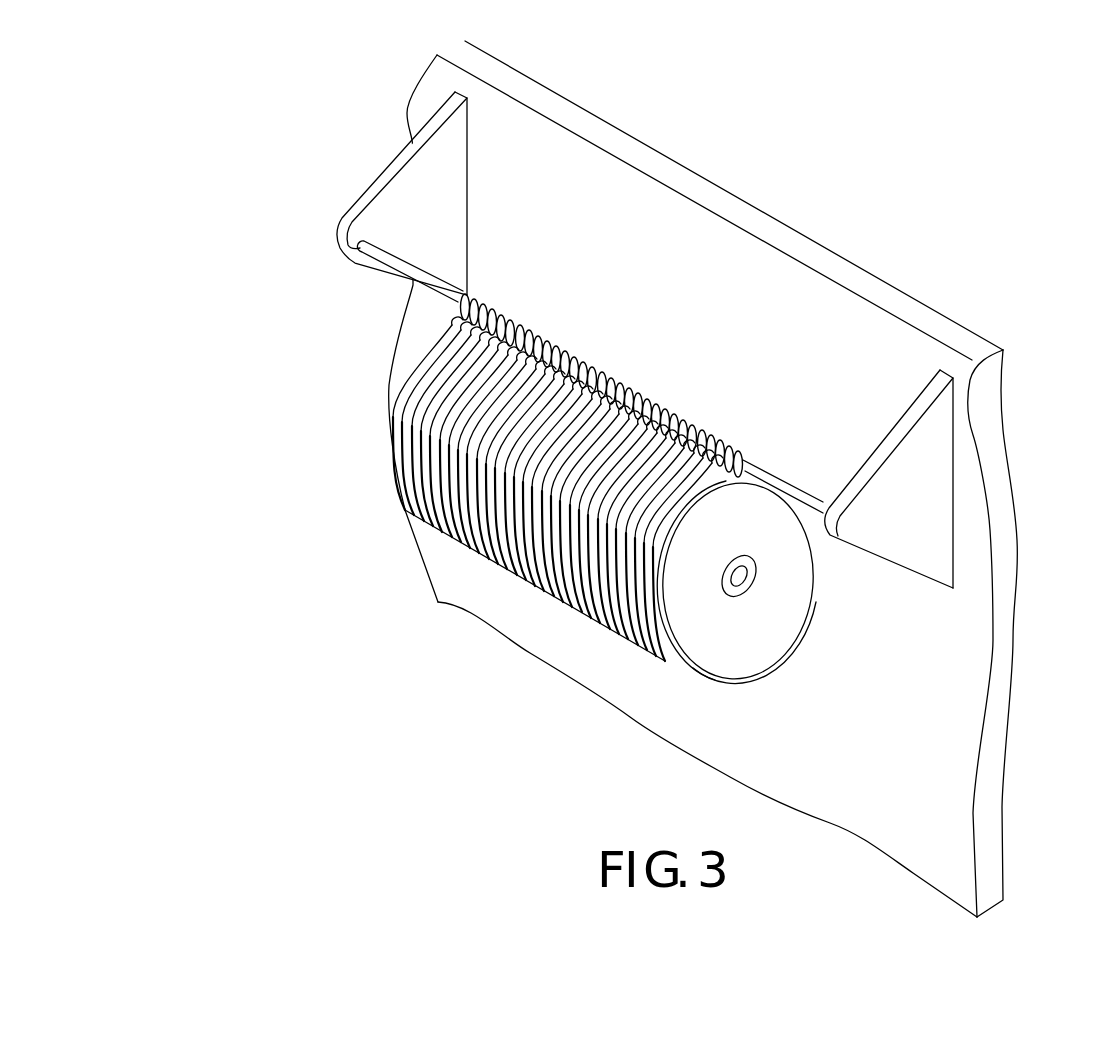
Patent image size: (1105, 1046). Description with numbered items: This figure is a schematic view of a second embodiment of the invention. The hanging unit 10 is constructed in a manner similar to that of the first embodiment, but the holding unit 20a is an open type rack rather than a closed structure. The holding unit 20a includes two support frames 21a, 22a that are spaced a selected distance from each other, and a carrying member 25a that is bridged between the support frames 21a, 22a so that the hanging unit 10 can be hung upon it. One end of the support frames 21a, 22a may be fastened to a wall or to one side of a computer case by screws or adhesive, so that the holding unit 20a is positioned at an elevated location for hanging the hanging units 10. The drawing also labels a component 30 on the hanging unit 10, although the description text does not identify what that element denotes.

The hanging unit 10 is at (573, 633).
The holding unit 20a is at (368, 308).
The support frame 21a is at (405, 197).
The support frame 22a is at (908, 482).
The carrying member 25a is at (370, 252).
The end cap 30 is at (723, 645).